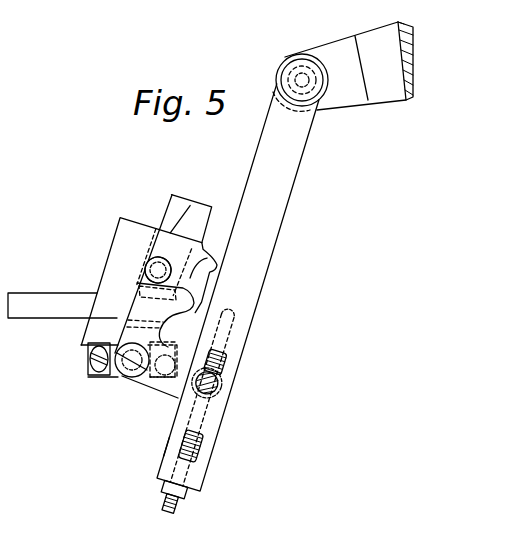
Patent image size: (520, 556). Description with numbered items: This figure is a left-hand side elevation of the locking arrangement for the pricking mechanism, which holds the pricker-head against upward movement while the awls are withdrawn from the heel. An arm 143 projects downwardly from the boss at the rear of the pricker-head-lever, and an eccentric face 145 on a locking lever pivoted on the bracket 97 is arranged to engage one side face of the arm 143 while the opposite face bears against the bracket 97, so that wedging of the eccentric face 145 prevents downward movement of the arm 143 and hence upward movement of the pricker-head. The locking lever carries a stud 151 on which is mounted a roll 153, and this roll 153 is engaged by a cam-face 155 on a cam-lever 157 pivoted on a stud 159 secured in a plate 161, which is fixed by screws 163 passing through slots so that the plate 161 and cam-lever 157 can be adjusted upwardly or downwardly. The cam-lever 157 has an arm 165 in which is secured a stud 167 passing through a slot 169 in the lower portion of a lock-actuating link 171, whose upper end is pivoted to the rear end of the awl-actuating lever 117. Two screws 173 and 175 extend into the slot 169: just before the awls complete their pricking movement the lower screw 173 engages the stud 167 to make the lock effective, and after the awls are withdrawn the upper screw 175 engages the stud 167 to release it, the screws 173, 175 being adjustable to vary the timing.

The bracket 97 is at (126, 284).
The awl-actuating lever 117 is at (383, 97).
The arm 143 is at (150, 265).
The eccentric face 145 is at (195, 201).
The stud 151 is at (122, 274).
The roll 153 is at (124, 260).
The cam-face 155 is at (210, 266).
The cam-lever 157 is at (118, 315).
The stud 159 is at (160, 384).
The plate 161 is at (92, 372).
The screws 163 is at (88, 353).
The arm 165 is at (148, 418).
The stud 167 is at (241, 386).
The slot 169 is at (240, 407).
The lock-actuating link 171 is at (239, 302).
The screw 173 is at (221, 448).
The screw 175 is at (252, 357).